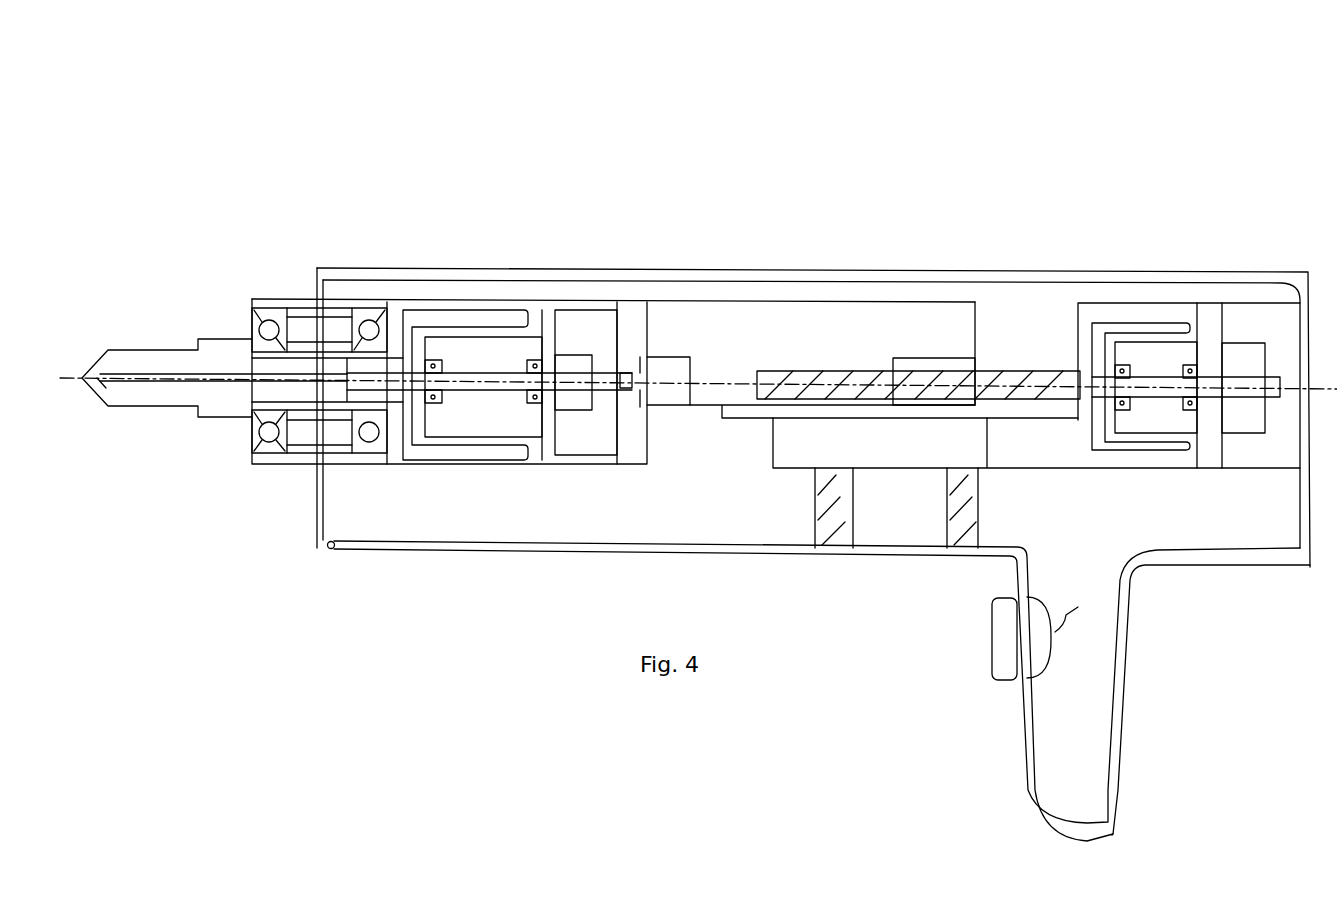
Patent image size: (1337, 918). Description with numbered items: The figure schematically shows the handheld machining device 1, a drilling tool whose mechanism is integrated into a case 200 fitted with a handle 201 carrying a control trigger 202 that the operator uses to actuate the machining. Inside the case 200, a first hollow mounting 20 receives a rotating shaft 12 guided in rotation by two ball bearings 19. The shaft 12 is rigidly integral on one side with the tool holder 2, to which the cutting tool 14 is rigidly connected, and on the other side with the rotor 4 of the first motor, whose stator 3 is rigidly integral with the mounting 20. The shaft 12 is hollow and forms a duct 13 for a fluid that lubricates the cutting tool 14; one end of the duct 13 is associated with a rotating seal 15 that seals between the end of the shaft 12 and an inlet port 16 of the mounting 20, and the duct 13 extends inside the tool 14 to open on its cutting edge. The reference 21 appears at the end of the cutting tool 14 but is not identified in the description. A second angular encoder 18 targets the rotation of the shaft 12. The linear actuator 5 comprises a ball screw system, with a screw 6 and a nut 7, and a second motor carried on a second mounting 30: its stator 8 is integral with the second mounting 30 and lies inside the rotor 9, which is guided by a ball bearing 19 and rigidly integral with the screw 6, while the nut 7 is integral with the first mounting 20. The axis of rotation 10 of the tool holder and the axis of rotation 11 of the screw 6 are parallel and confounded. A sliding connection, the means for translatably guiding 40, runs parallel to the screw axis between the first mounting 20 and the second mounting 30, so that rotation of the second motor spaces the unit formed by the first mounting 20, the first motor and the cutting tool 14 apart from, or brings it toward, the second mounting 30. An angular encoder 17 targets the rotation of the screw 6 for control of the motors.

The handheld machining device 1 is at (372, 110).
The tool holder 2 is at (246, 333).
The stator of first motor 3 is at (452, 343).
The rotor of first motor 4 is at (412, 323).
The linear actuator 5 is at (992, 210).
The screw 6 is at (1008, 360).
The nut 7 is at (923, 368).
The stator of second motor 8 is at (1168, 357).
The rotor of second motor 9 is at (1133, 322).
The axis of rotation of the tool holder 10 is at (357, 384).
The axis of rotation of the screw 11 is at (985, 397).
The rotating shaft 12 is at (466, 395).
The duct 13 is at (487, 384).
The cutting tool 14 is at (125, 343).
The rotating seal 15 is at (643, 350).
The inlet port 16 is at (653, 392).
The angular encoder 17 is at (1242, 340).
The second angular encoder 18 is at (573, 352).
The ball bearings 19 is at (367, 307).
The first mounting 20 is at (303, 343).
The tool tip 21 is at (90, 395).
The second mounting 30 is at (890, 455).
The means for translatably guiding 40 is at (800, 420).
The case 200 is at (758, 270).
The handle 201 is at (1137, 715).
The control trigger 202 is at (1008, 650).